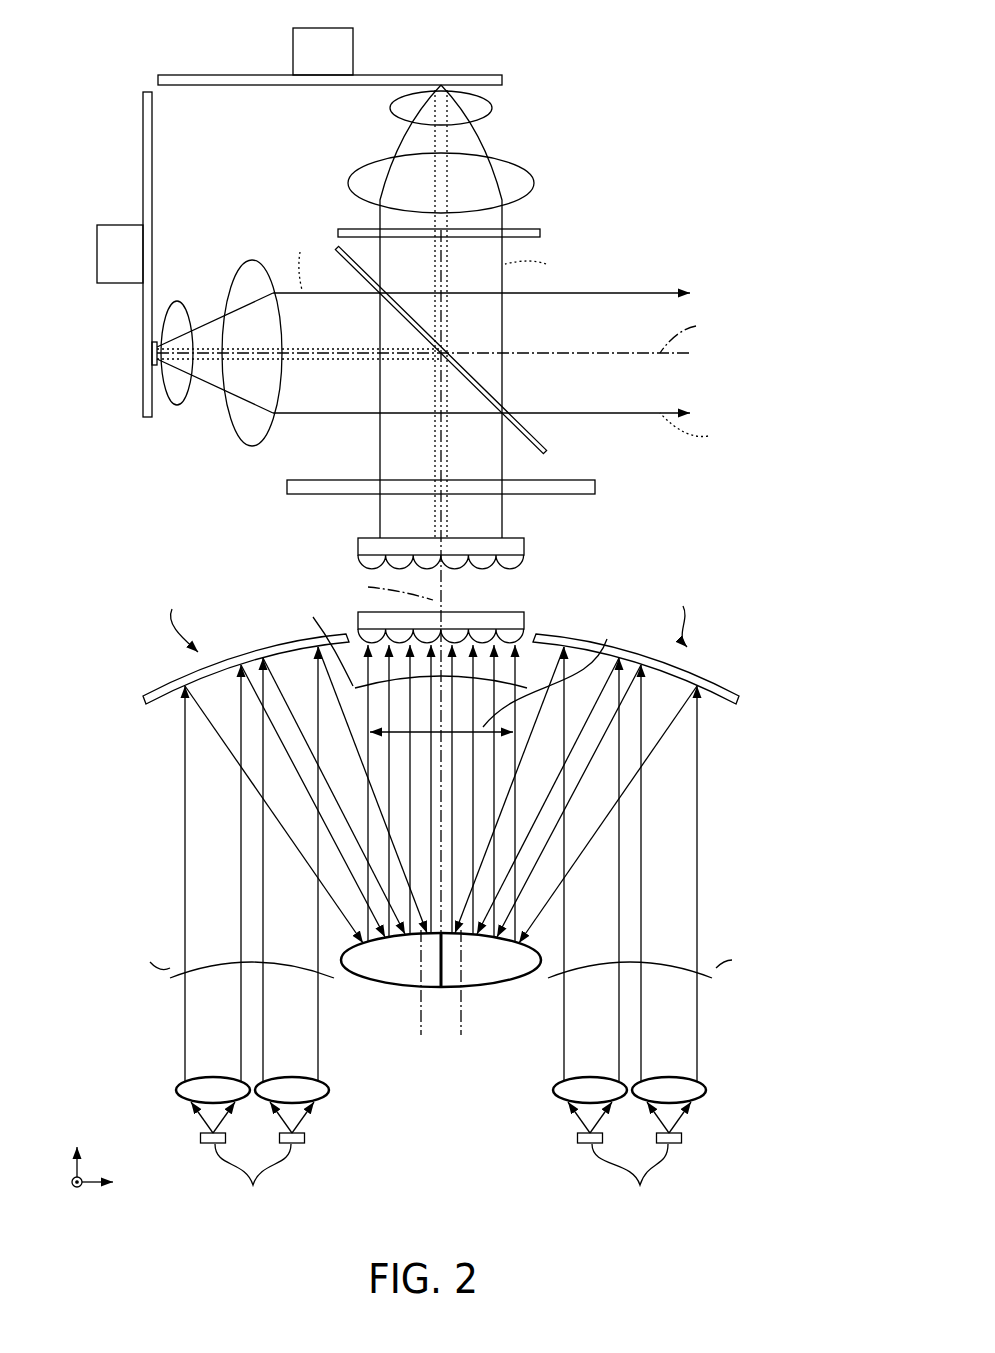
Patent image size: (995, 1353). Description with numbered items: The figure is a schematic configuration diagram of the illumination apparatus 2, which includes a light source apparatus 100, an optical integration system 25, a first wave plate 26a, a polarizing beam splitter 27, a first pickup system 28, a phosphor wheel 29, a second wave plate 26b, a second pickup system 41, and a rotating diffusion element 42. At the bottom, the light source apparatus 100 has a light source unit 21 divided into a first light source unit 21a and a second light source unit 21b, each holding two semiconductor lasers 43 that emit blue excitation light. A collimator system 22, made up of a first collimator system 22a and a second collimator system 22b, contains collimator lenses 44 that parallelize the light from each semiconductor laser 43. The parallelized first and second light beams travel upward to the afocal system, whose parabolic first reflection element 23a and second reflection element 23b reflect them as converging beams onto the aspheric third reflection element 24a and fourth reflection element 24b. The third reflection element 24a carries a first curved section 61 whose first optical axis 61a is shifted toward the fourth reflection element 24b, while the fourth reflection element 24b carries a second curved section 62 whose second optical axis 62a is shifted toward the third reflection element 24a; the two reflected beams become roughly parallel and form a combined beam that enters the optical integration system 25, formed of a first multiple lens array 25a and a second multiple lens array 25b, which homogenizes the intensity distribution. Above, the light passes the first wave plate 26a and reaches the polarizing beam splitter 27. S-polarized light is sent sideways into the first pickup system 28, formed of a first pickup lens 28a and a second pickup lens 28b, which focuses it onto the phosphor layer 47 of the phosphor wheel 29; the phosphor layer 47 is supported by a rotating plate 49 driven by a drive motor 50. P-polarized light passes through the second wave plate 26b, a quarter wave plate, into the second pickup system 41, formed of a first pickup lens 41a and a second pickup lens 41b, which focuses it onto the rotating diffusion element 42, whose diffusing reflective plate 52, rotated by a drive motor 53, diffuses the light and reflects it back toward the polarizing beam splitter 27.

The illumination apparatus 2 is at (548, 62).
The light source unit 21 is at (393, 1150).
The first light source unit 21a is at (311, 1145).
The second light source unit 21b is at (569, 1143).
The collimator system 22 is at (393, 1081).
The first collimator system 22a is at (331, 1081).
The second collimator system 22b is at (552, 1078).
The first reflection element 23a is at (172, 682).
The second reflection element 23b is at (713, 682).
The third reflection element 24a is at (360, 968).
The fourth reflection element 24b is at (525, 968).
The optical integration system 25 is at (622, 527).
The first multiple lens array 25a is at (536, 622).
The second multiple lens array 25b is at (532, 545).
The first wave plate 26a is at (287, 487).
The second wave plate 26b is at (540, 233).
The polarizing beam splitter 27 is at (523, 423).
The first pickup system 28 is at (268, 200).
The first pickup lens 28a is at (247, 268).
The second pickup lens 28b is at (180, 312).
The phosphor wheel 29 is at (112, 178).
The second pickup system 41 is at (600, 92).
The first pickup lens 41a is at (520, 190).
The second pickup lens 41b is at (477, 108).
The rotating diffusion element 42 is at (200, 56).
The semiconductor laser 43 is at (441, 1182).
The collimator lens 44 is at (180, 1090).
The phosphor layer 47 is at (152, 352).
The rotating plate 49 is at (143, 125).
The drive motor 50 is at (103, 248).
The diffusing reflective plate 52 is at (158, 80).
The drive motor 53 is at (340, 54).
The first curved section 61 is at (360, 966).
The first optical axis 61a is at (461, 1000).
The second curved section 62 is at (525, 965).
The second optical axis 62a is at (421, 1000).
The light source apparatus 100 is at (768, 700).